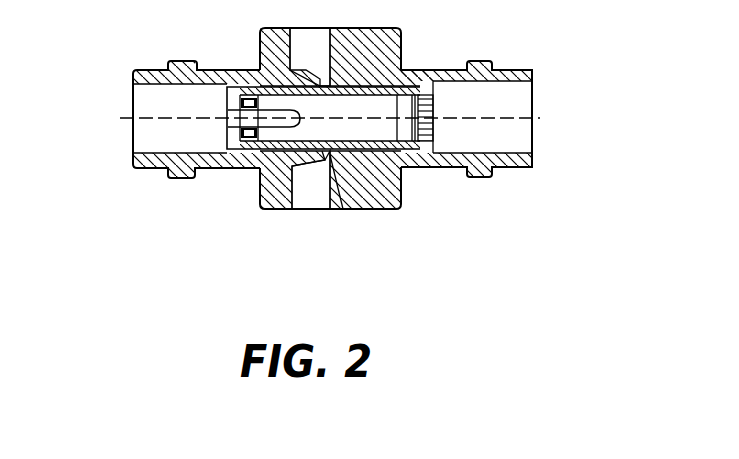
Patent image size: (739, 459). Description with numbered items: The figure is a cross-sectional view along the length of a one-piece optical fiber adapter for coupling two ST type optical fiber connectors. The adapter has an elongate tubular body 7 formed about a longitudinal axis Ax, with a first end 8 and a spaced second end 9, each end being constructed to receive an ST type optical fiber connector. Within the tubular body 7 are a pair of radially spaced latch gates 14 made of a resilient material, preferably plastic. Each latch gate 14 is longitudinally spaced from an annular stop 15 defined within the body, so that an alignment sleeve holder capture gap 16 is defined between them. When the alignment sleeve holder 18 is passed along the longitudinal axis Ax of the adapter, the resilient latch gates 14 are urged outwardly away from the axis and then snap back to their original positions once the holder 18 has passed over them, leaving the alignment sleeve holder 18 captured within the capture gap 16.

The tubular body 7 is at (392, 210).
The first end 8 is at (513, 143).
The second end 9 is at (147, 145).
The latch gate 14 is at (305, 166).
The annular stop 15 is at (309, 70).
The alignment sleeve holder capture gap 16 is at (343, 210).
The alignment sleeve holder 18 is at (358, 100).
The longitudinal axis Ax is at (503, 116).